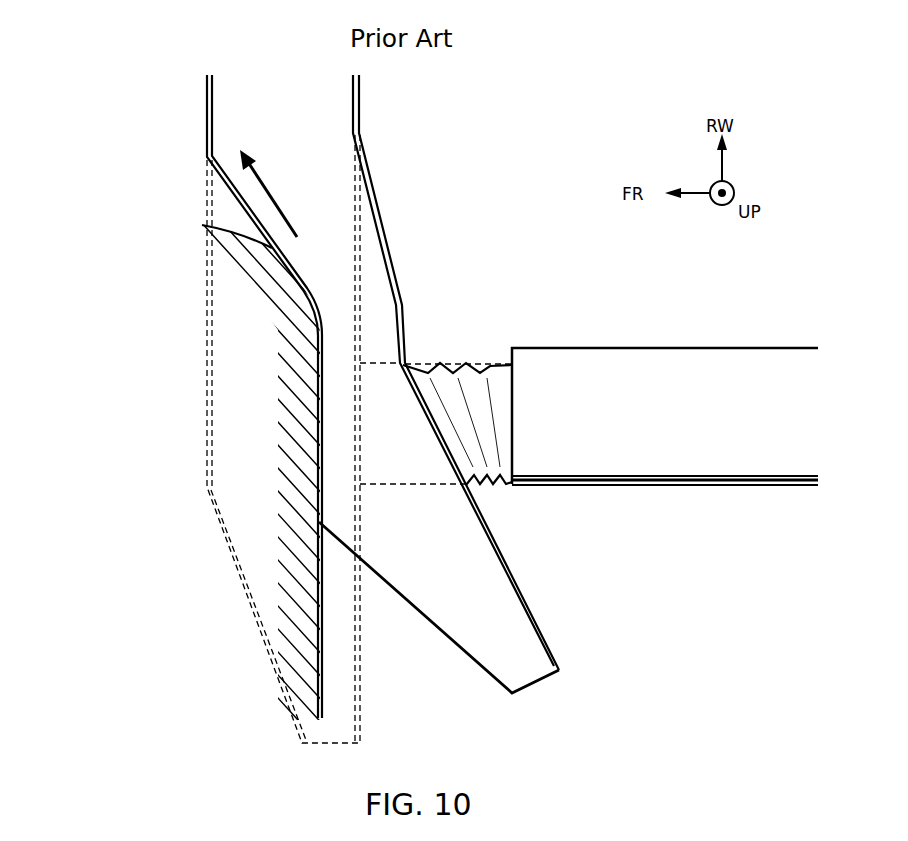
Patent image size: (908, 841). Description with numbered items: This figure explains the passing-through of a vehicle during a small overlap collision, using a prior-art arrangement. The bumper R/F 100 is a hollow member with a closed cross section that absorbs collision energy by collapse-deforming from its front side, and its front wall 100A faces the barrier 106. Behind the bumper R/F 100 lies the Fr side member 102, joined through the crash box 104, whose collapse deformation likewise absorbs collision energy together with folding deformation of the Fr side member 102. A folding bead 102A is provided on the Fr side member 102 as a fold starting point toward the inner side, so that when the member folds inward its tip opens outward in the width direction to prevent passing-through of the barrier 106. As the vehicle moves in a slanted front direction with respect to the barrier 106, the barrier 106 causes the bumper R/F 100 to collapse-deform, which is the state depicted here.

The bumper R/F 100 is at (206, 112).
The front wall 100A is at (318, 272).
The Fr side member 102 is at (593, 348).
The folding bead 102A is at (665, 476).
The crash box 104 is at (444, 363).
The barrier 106 is at (320, 607).